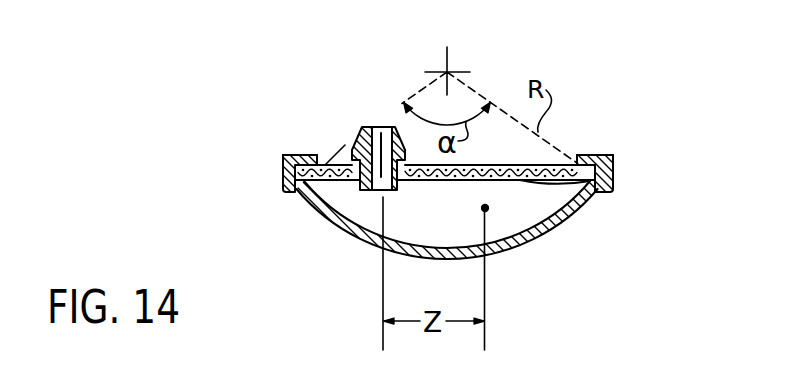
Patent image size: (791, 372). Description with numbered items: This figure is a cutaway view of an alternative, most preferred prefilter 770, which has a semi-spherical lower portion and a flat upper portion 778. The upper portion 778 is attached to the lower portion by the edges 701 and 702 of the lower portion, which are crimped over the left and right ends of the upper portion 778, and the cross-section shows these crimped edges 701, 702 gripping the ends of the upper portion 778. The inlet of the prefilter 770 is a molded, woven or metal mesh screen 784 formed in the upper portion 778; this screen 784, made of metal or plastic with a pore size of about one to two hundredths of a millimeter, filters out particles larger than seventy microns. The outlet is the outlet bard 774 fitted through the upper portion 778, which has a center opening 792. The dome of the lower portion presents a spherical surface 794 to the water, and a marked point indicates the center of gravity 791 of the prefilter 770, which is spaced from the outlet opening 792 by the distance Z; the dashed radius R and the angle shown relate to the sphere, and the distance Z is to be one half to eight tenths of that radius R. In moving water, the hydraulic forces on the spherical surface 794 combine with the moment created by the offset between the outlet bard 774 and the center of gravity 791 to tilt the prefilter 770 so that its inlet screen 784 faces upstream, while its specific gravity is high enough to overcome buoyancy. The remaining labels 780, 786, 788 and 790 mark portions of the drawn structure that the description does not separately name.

The edge of lower portion 701 is at (283, 158).
The edge of lower portion 702 is at (614, 157).
The prefilter 770 is at (600, 203).
The outlet bard 774 is at (380, 126).
The upper portion 778 is at (334, 163).
The clamp flange 780 is at (594, 156).
The mesh screen 784 is at (490, 165).
The lens wall 786 is at (335, 221).
The cavity 788 is at (508, 195).
The lens bottom portion 790 is at (404, 257).
The center of gravity 791 is at (489, 213).
The center opening 792 is at (360, 126).
The spherical surface 794 is at (552, 218).